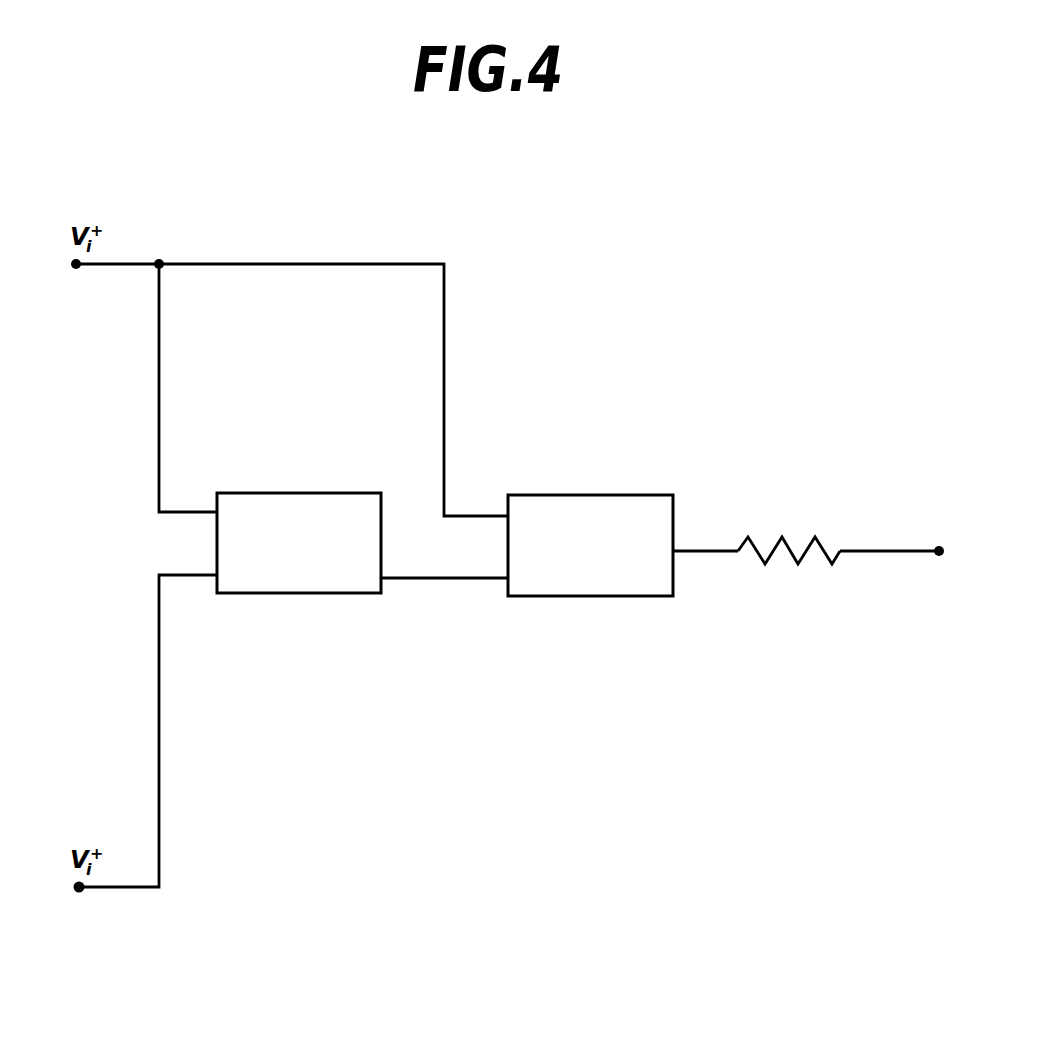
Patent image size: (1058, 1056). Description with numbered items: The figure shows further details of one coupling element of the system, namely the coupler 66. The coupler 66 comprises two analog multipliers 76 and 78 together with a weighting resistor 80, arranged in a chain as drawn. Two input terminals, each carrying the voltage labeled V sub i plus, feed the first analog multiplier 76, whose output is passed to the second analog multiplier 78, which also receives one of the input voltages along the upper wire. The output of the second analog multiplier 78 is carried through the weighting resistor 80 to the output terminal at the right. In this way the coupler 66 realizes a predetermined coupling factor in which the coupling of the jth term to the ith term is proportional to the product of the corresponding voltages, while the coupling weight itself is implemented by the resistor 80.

The coupler 66 is at (591, 362).
The analog multiplier 76 is at (313, 493).
The analog multiplier 78 is at (617, 495).
The weighting resistor 80 is at (815, 537).